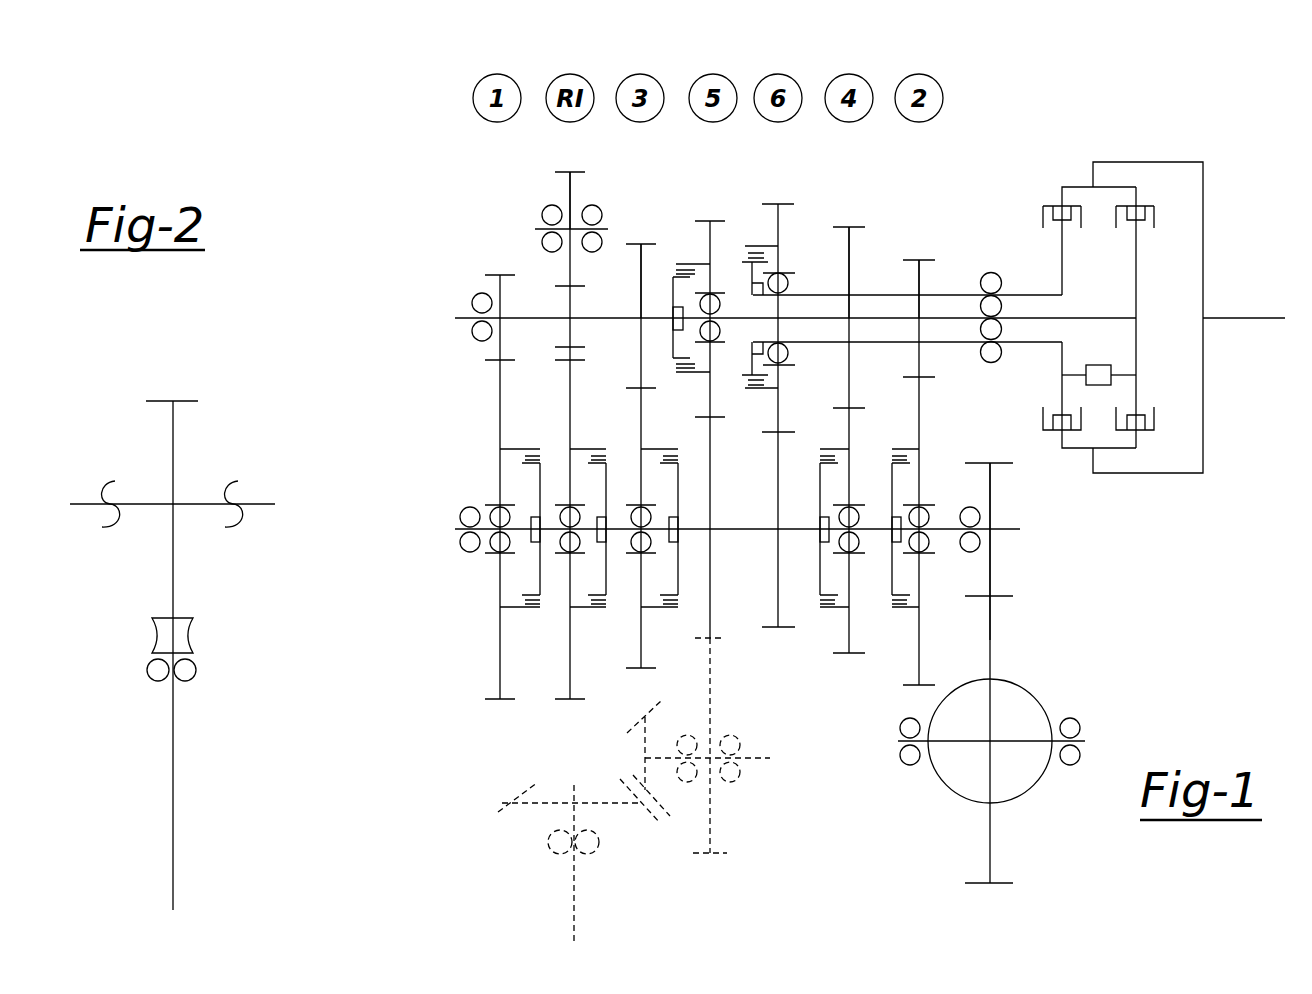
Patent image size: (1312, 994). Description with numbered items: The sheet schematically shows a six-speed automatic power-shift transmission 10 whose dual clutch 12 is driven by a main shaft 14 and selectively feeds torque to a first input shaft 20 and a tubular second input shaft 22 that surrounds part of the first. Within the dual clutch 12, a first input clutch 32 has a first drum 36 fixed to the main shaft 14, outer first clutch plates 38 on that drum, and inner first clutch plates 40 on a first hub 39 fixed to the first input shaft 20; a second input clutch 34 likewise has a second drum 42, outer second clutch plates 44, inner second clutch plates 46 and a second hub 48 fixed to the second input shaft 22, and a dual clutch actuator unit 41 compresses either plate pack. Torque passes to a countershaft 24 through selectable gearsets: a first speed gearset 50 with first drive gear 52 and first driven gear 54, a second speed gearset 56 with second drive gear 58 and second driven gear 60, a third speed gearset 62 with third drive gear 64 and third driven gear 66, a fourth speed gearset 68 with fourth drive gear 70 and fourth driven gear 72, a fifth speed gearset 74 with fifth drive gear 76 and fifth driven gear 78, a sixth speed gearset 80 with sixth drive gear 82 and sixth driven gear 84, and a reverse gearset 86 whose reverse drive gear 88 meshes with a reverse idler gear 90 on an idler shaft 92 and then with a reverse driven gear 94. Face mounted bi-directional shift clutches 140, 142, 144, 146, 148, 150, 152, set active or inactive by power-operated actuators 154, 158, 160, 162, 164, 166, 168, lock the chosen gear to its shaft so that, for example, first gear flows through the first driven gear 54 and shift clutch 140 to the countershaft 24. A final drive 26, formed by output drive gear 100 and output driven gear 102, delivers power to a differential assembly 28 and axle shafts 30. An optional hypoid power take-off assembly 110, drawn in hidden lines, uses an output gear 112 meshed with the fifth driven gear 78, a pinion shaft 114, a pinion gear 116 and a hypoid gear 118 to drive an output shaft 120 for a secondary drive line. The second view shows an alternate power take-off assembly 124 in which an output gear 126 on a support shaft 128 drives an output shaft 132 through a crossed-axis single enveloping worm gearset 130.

In FIG. 1, the automatic power-shift transmission 10 is at (285, 132).
In FIG. 1, the dual clutch 12 is at (1147, 158).
In FIG. 1, the main shaft 14 is at (1237, 316).
In FIG. 1, the first input shaft 20 is at (1120, 318).
In FIG. 1, the second input shaft 22 is at (1035, 295).
In FIG. 1, the countershaft 24 is at (733, 529).
In FIG. 1, the final drive 26 is at (1017, 577).
In FIG. 1, the differential assembly 28 is at (1059, 802).
In FIG. 1, the axle shafts 30 is at (1023, 741).
In FIG. 1, the first input clutch 32 is at (1177, 270).
In FIG. 1, the second input clutch 34 is at (1047, 278).
In FIG. 1, the first drum 36 is at (1152, 205).
In FIG. 1, the outer first clutch plates 38 is at (1156, 222).
In FIG. 1, the first hub 39 is at (1138, 294).
In FIG. 1, the inner first clutch plates 40 is at (1127, 222).
In FIG. 1, the dual clutch actuator unit 41 is at (1100, 365).
In FIG. 1, the second drum 42 is at (1045, 204).
In FIG. 1, the outer second clutch plates 44 is at (1041, 215).
In FIG. 1, the inner second clutch plates 46 is at (1073, 222).
In FIG. 1, the second hub 48 is at (1062, 245).
In FIG. 1, the first speed gearset 50 is at (452, 213).
In FIG. 1, the first drive gear 52 is at (500, 355).
In FIG. 1, the first driven gear 54 is at (500, 402).
In FIG. 1, the second speed gearset 56 is at (919, 255).
In FIG. 1, the second drive gear 58 is at (919, 285).
In FIG. 1, the second driven gear 60 is at (919, 400).
In FIG. 1, the third speed gearset 62 is at (641, 240).
In FIG. 1, the third drive gear 64 is at (641, 270).
In FIG. 1, the third driven gear 66 is at (641, 408).
In FIG. 1, the fourth speed gearset 68 is at (849, 222).
In FIG. 1, the fourth drive gear 70 is at (849, 265).
In FIG. 1, the fourth driven gear 72 is at (849, 650).
In FIG. 1, the fifth speed gearset 74 is at (712, 218).
In FIG. 1, the fifth drive gear 76 is at (710, 240).
In FIG. 1, the fifth driven gear 78 is at (711, 455).
In FIG. 1, the sixth speed gearset 80 is at (778, 200).
In FIG. 1, the sixth drive gear 82 is at (779, 230).
In FIG. 1, the sixth driven gear 84 is at (778, 492).
In FIG. 1, the reverse gearset 86 is at (568, 168).
In FIG. 1, the reverse drive gear 88 is at (570, 295).
In FIG. 1, the reverse idler gear 90 is at (570, 195).
In FIG. 1, the idler shaft 92 is at (540, 232).
In FIG. 1, the reverse driven gear 94 is at (570, 398).
In FIG. 1, the output drive gear 100 is at (992, 487).
In FIG. 1, the output driven gear 102 is at (992, 624).
In FIG. 1, the hypoid power take-off assembly 110 is at (433, 757).
In FIG. 1, the output gear 112 is at (711, 688).
In FIG. 1, the pinion shaft 114 is at (742, 760).
In FIG. 1, the pinion gear 116 is at (640, 722).
In FIG. 1, the hypoid gear 118 is at (500, 810).
In FIG. 1, the output shaft 120 is at (574, 893).
In FIG. 2, the power take-off assembly 124 is at (122, 445).
In FIG. 2, the output gear 126 is at (175, 440).
In FIG. 2, the support shaft 128 is at (207, 506).
In FIG. 2, the crossed-axis, single enveloping worm gearset 130 is at (147, 632).
In FIG. 2, the output shaft 132 is at (175, 795).
In FIG. 1, the first face mounted bi-directional shift clutch 140 is at (533, 612).
In FIG. 1, the second bi-directional shift clutch 142 is at (886, 612).
In FIG. 1, the third bi-directional shift clutch 144 is at (675, 612).
In FIG. 1, the fourth bi-directional shift clutch 146 is at (817, 612).
In FIG. 1, the fifth bi-directional shift clutch 148 is at (682, 380).
In FIG. 1, the sixth bi-directional shift clutch 150 is at (746, 242).
In FIG. 1, the seventh bi-directional shift clutch 152 is at (603, 612).
In FIG. 1, the first power-operated clutch actuator 154 is at (536, 517).
In FIG. 1, the second power-operated actuator 158 is at (892, 517).
In FIG. 1, the third power-operated actuator 160 is at (675, 517).
In FIG. 1, the fourth power-operated actuator 162 is at (820, 517).
In FIG. 1, the fifth power-operated actuator 164 is at (673, 305).
In FIG. 1, the sixth power-operated actuator 166 is at (758, 293).
In FIG. 1, the seventh power-operated actuator 168 is at (603, 517).